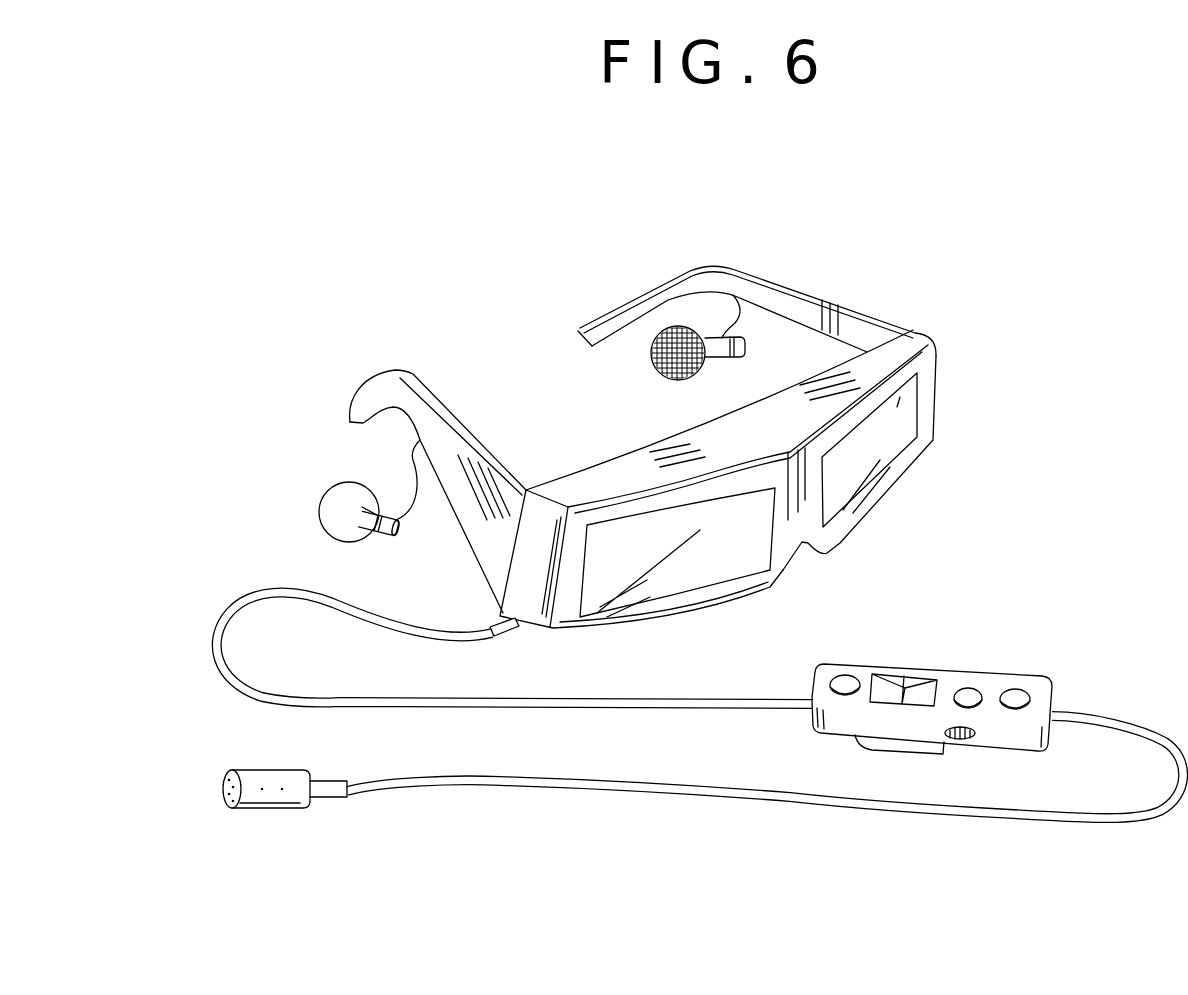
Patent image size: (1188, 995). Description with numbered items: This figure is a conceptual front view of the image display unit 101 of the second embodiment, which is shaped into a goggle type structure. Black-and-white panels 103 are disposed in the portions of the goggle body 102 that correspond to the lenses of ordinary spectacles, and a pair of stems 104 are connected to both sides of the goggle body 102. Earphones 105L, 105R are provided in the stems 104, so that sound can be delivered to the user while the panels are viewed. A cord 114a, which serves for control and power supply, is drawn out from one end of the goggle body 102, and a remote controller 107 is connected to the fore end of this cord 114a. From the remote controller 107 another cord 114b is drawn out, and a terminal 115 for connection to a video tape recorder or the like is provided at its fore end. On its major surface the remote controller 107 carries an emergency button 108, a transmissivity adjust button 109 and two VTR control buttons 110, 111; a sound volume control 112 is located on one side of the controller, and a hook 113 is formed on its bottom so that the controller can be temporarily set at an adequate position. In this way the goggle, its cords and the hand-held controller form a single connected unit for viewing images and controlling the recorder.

The image display unit 101 is at (893, 270).
The goggle body 102 is at (905, 337).
The black-and-white panels 103 is at (905, 425).
The stems 104 is at (782, 292).
The earphone 105L is at (657, 367).
The earphone 105R is at (325, 503).
The remote controller 107 is at (887, 640).
The emergency button 108 is at (845, 680).
The transmissivity adjust button 109 is at (920, 680).
The VTR control button 110 is at (972, 690).
The VTR control button 111 is at (1020, 695).
The sound volume control 112 is at (962, 735).
The hook 113 is at (858, 752).
The cord 114a is at (668, 700).
The cord 114b is at (615, 790).
The terminal 115 is at (268, 803).